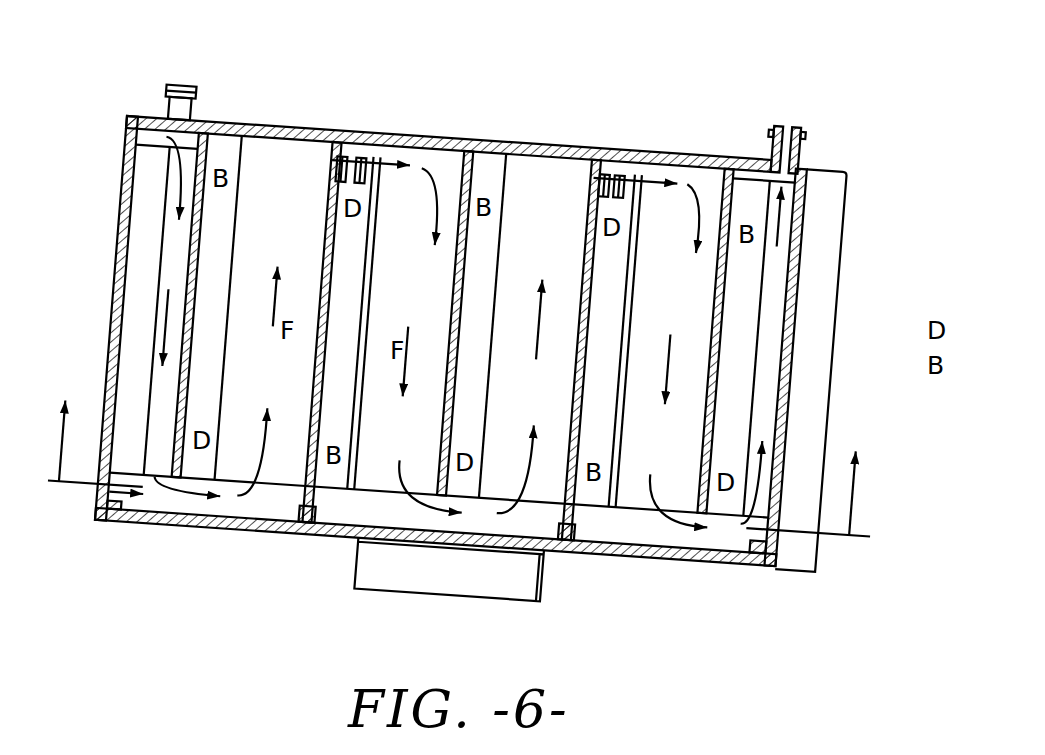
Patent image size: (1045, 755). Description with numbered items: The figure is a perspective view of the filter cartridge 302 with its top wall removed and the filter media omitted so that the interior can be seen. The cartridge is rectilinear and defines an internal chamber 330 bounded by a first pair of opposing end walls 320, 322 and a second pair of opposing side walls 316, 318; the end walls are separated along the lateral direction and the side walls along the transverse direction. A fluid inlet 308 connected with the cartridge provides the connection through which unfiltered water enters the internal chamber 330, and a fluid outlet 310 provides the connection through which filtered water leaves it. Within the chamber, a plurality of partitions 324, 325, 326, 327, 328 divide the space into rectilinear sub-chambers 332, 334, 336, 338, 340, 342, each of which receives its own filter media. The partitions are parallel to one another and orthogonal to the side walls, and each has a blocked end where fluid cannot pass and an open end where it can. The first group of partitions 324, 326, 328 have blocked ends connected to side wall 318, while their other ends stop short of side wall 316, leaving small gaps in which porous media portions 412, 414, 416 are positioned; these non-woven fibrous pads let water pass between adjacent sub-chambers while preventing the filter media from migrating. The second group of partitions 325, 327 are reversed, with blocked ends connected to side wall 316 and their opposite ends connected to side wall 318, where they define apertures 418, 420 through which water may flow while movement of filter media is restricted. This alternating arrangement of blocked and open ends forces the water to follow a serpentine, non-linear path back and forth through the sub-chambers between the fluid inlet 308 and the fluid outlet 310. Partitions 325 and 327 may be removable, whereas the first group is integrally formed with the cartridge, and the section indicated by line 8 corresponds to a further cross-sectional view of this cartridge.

The filter cartridge 302 is at (673, 85).
The fluid inlet 308 is at (166, 109).
The fluid outlet 310 is at (804, 154).
The side wall 316 is at (259, 533).
The side wall 318 is at (593, 150).
The end wall 320 is at (118, 214).
The end wall 322 is at (813, 331).
The partition 324 is at (228, 152).
The partition 325 is at (317, 529).
The partition 326 is at (485, 182).
The partition 327 is at (600, 496).
The partition 328 is at (740, 211).
The internal chamber 330 is at (258, 293).
The sub-chamber 332 is at (140, 310).
The sub-chamber 334 is at (243, 431).
The sub-chamber 336 is at (390, 448).
The sub-chamber 338 is at (505, 466).
The sub-chamber 340 is at (655, 450).
The sub-chamber 342 is at (770, 408).
The porous media portion 412 is at (142, 526).
The porous media portion 414 is at (407, 518).
The porous media portion 416 is at (718, 566).
The aperture 418 is at (331, 163).
The aperture 420 is at (592, 181).
The section line 8- 8 is at (455, 467).